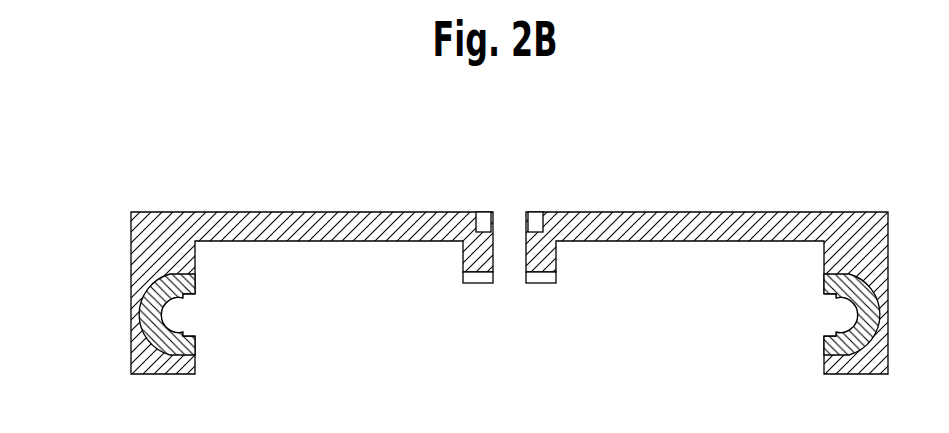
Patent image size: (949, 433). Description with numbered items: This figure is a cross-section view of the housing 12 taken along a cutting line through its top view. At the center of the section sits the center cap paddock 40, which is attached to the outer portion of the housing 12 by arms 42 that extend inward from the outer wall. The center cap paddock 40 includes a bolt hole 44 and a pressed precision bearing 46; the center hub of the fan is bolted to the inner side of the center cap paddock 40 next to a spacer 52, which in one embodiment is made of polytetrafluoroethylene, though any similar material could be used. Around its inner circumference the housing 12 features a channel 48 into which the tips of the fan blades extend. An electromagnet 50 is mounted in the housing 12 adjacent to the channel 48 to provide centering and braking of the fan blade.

The housing 12 is at (882, 238).
The center cap paddock 40 is at (448, 279).
The arms 42 is at (283, 243).
The bolt hole 44 is at (520, 194).
The pressed precision bearing 46 is at (470, 199).
The channel 48 is at (197, 314).
The electromagnet 50 is at (137, 335).
The spacer 52 is at (548, 285).